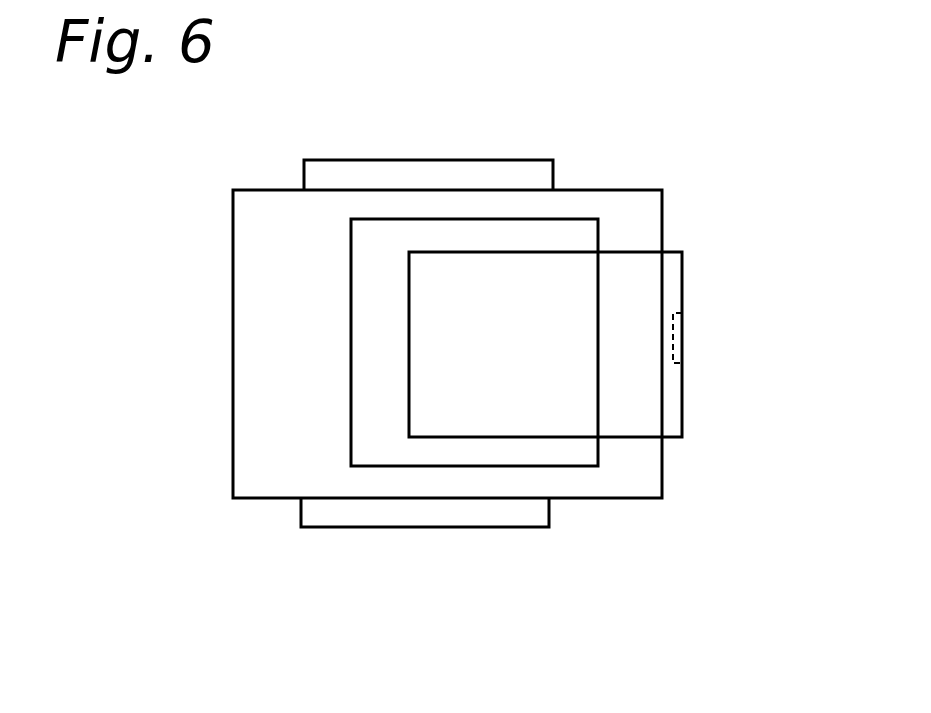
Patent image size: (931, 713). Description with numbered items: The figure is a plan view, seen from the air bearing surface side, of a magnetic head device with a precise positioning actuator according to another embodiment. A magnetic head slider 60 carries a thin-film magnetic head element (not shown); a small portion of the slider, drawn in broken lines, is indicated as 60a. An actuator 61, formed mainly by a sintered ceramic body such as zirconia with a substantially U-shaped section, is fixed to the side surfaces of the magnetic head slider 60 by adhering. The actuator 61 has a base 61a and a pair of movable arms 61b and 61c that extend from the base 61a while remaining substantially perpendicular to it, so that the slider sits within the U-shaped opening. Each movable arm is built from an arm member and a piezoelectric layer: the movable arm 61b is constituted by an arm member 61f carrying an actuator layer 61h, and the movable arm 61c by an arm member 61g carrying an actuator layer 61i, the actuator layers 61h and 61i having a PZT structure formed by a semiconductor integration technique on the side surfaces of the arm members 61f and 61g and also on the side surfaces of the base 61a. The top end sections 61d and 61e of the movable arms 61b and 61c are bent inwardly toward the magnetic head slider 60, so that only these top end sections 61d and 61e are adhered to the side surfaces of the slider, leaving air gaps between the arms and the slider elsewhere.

The magnetic head slider 60 is at (662, 395).
The projection of element 60a is at (685, 327).
The actuator 61 is at (618, 180).
The base 61a is at (253, 336).
The movable arm 61b is at (538, 603).
The movable arm 61c is at (522, 78).
The top end section 61d is at (637, 456).
The top end section 61e is at (644, 231).
The arm member 61f is at (497, 487).
The arm member 61g is at (481, 210).
The actuator layer 61h is at (406, 513).
The actuator layer 61i is at (429, 178).